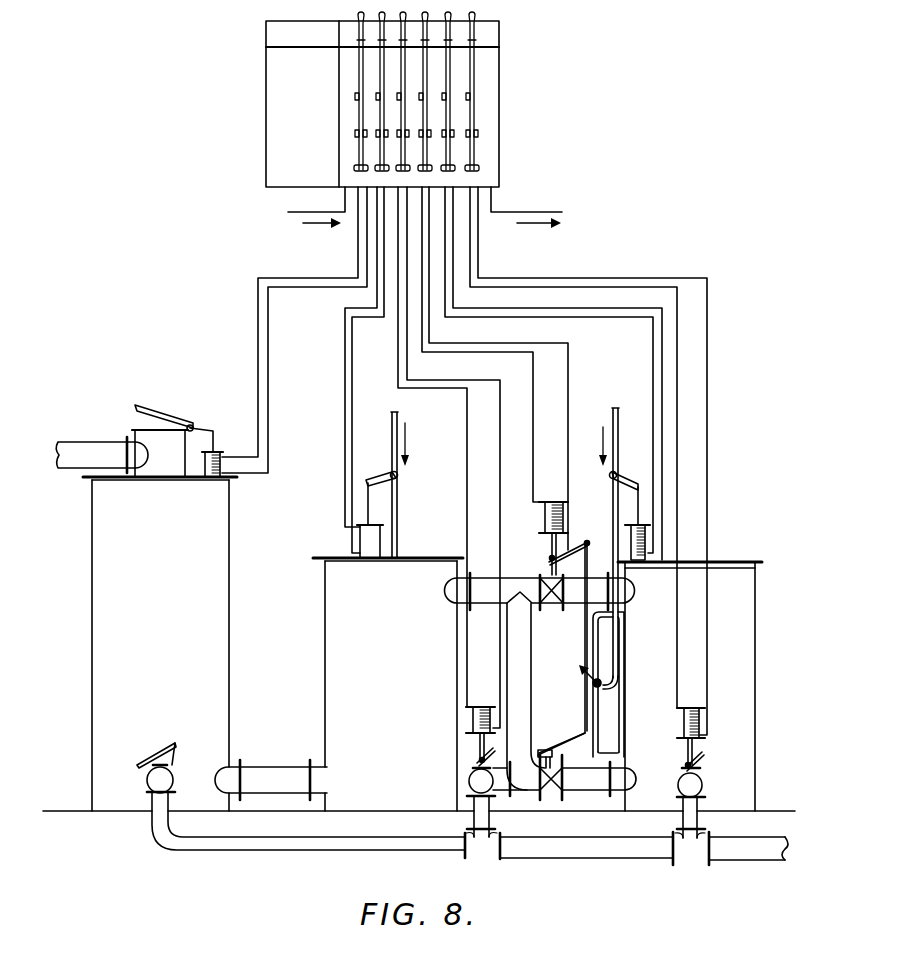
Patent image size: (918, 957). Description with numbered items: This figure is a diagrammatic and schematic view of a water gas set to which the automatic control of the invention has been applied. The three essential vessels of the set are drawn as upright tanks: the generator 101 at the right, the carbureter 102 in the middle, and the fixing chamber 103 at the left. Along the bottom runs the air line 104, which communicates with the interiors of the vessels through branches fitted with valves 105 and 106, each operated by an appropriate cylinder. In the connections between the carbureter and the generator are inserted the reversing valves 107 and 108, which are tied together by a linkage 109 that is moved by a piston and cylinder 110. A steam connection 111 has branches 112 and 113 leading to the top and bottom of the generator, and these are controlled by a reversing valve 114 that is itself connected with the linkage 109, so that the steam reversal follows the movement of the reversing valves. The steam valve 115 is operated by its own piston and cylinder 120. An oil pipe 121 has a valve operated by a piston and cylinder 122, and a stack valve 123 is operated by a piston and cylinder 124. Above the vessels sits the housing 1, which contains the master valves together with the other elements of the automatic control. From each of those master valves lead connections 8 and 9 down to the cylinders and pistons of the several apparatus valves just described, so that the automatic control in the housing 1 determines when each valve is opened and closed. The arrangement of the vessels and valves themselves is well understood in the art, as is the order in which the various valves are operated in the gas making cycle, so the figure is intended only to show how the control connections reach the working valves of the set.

The housing 1 is at (500, 78).
The connection 8 is at (257, 356).
The connection 9 is at (269, 362).
The generator 101 is at (748, 639).
The carbureter 102 is at (325, 641).
The fixing chamber 103 is at (92, 641).
The air line 104 is at (597, 855).
The valve 105 is at (701, 773).
The valve 106 is at (470, 770).
The reversing valve 107 is at (552, 611).
The reversing valve 108 is at (548, 799).
The linkage 109 is at (584, 704).
The piston and cylinder 110 is at (543, 524).
The steam connection 111 is at (612, 410).
The branch 112 is at (598, 722).
The branch 113 is at (593, 649).
The reversing valve 114 is at (600, 687).
The steam valve 115 is at (610, 478).
The piston and cylinder 120 is at (628, 541).
The oil pipe 121 is at (399, 424).
The piston and cylinder 122 is at (360, 540).
The stack valve 123 is at (165, 410).
The piston and cylinder 124 is at (220, 445).